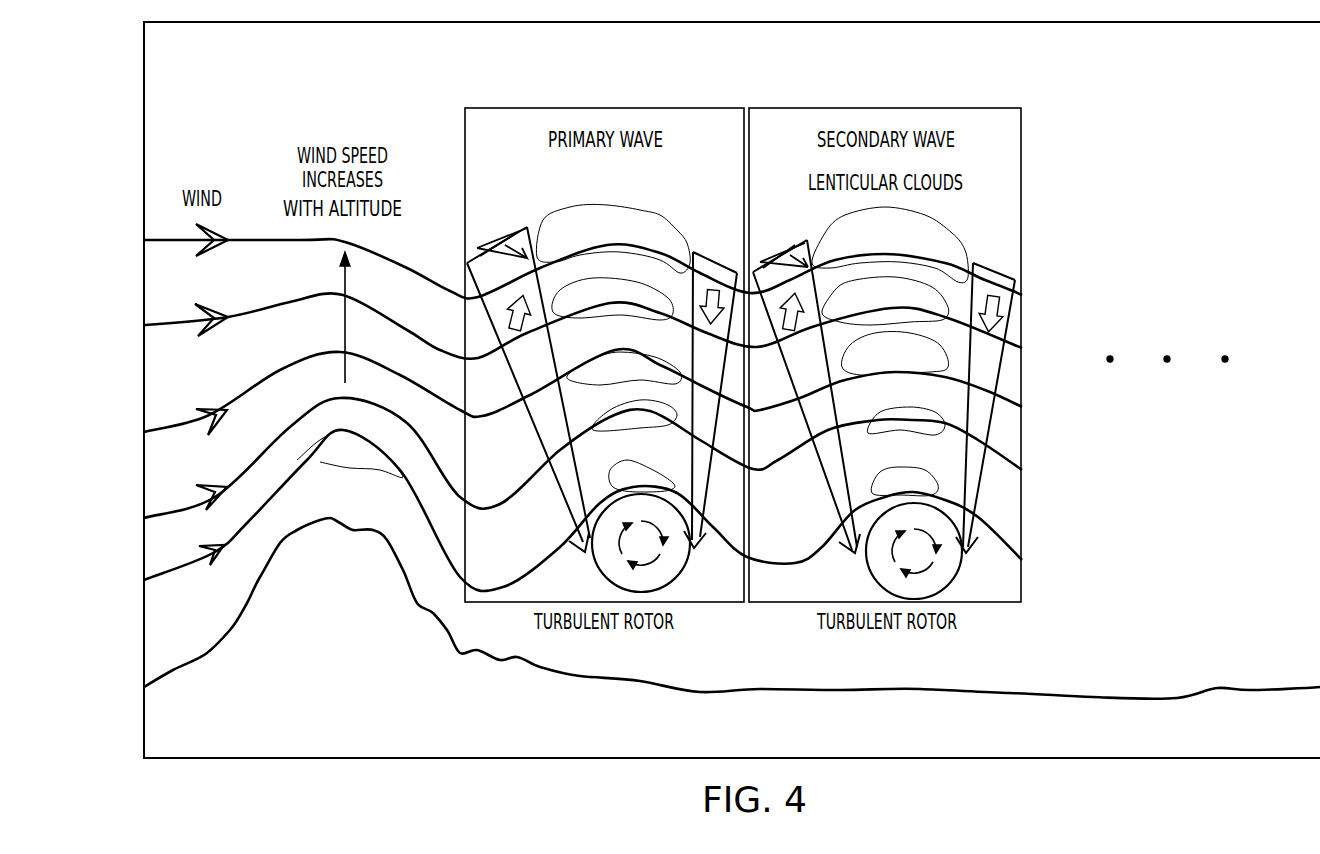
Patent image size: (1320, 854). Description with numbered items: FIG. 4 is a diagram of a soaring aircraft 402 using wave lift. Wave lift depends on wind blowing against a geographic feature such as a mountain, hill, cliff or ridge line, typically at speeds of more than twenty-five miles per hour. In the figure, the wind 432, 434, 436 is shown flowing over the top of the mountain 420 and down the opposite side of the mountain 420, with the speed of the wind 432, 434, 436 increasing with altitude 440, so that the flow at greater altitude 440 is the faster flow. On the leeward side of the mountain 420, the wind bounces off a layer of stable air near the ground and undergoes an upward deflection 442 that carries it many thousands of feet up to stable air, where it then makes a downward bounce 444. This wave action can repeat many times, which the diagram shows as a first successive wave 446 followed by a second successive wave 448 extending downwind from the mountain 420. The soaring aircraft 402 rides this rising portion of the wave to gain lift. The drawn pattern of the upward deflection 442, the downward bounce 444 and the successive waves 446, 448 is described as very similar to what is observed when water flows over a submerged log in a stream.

The soaring aircraft 402 is at (513, 232).
The mountain 420 is at (331, 521).
The wind 432 is at (226, 239).
The wind 434 is at (170, 428).
The wind 436 is at (172, 576).
The altitude 440 is at (344, 279).
The upward deflection 442 is at (538, 438).
The downward bounce 444 is at (713, 458).
The successive wave 446 is at (845, 506).
The successive wave 448 is at (975, 490).